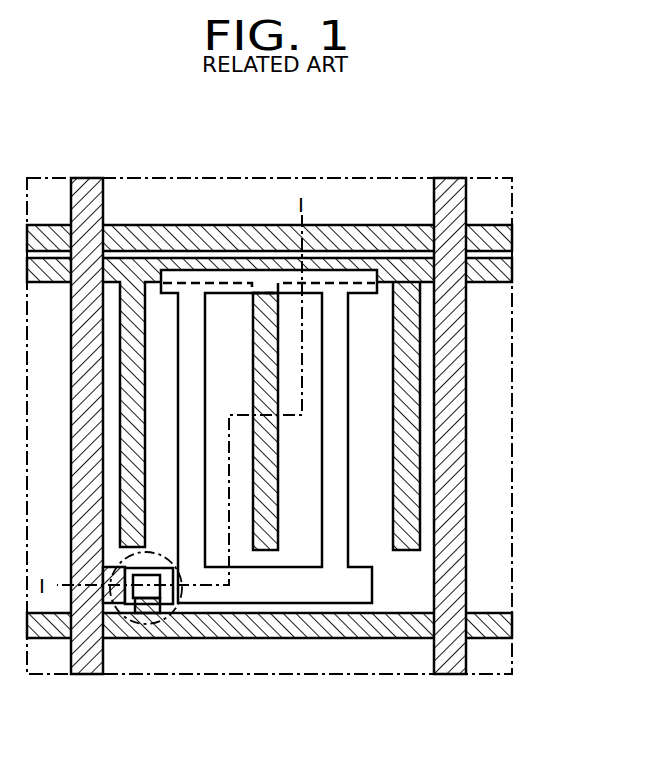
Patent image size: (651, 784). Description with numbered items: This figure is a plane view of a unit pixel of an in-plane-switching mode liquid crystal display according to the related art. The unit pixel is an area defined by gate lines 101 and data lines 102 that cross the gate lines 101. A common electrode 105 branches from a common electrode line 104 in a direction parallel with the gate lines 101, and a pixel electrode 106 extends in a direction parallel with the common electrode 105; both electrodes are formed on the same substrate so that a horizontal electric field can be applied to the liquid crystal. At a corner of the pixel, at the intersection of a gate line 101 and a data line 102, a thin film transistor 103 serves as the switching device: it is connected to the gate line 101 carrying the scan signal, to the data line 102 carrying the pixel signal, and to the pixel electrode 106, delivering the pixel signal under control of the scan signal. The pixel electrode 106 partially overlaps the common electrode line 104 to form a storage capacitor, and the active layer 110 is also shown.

The gate line 101 is at (513, 627).
The data line 102 is at (451, 660).
The thin film transistor 103 is at (145, 618).
The common electrode line 104 is at (513, 270).
The common electrode 105 is at (407, 551).
The pixel electrode 106 is at (315, 592).
The active layer 110 is at (231, 277).